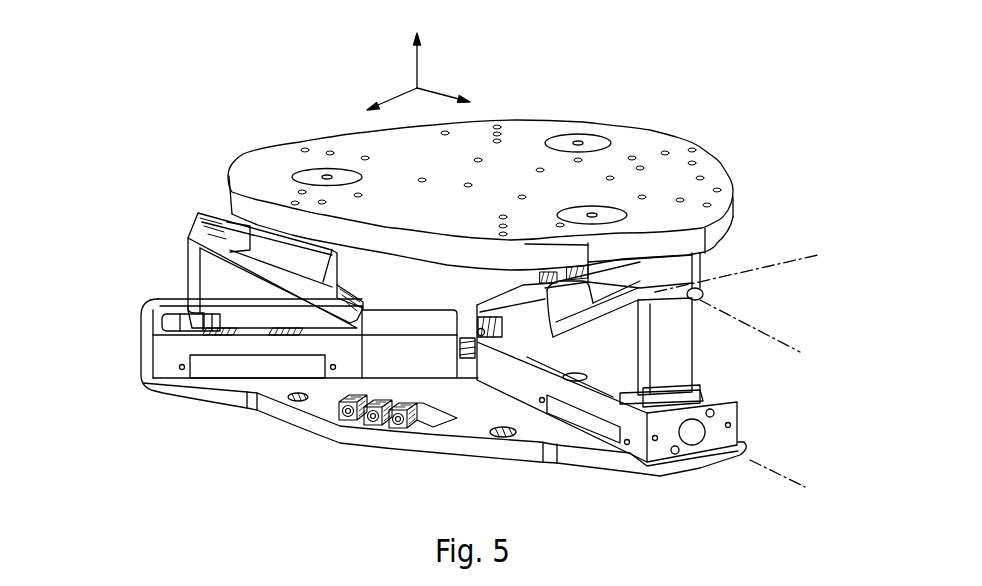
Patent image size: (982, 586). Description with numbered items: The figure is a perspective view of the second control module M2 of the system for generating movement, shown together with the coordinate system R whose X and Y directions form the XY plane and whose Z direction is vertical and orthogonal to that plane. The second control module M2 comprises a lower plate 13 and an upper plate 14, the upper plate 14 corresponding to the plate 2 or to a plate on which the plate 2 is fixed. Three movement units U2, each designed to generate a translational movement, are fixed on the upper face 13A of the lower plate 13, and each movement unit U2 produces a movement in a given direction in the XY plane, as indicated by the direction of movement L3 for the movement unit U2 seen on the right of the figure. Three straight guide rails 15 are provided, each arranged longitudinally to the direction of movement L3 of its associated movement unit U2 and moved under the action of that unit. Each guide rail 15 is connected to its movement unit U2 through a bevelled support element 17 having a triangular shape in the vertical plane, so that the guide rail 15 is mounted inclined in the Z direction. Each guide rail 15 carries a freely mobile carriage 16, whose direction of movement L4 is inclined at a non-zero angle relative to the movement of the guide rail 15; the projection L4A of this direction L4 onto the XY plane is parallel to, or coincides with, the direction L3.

The plate 2 is at (742, 213).
The lower plate 13 is at (493, 447).
The upper face 13A is at (479, 415).
The upper plate 14 is at (727, 170).
The straight guide rail 15 is at (150, 232).
The mobile carriage 16 is at (217, 205).
The bevelled support element 17 is at (188, 280).
The movement unit U2 is at (163, 355).
The second control module M2 is at (203, 122).
The coordinate system R is at (384, 50).
The direction of movement L3 is at (750, 460).
The direction of movement of the mobile carriage L4 is at (773, 267).
The projection of the L4 direction L4A is at (763, 323).